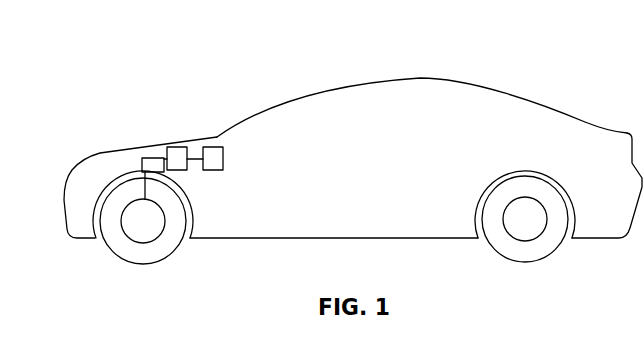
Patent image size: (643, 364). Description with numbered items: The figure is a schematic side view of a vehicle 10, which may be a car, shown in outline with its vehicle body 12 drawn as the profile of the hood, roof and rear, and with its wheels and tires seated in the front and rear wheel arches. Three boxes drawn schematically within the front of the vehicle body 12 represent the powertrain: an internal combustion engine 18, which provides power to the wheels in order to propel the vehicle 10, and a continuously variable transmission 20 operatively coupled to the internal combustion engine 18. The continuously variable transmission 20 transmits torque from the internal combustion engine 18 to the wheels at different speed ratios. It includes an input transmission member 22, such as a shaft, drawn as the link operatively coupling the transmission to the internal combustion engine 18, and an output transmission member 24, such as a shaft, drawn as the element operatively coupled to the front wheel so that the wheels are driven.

The vehicle 10 is at (353, 171).
The vehicle body 12 is at (417, 80).
The internal combustion engine 18 is at (217, 147).
The continuously variable transmission 20 is at (175, 147).
The input transmission member 22 is at (192, 157).
The output transmission member 24 is at (148, 158).